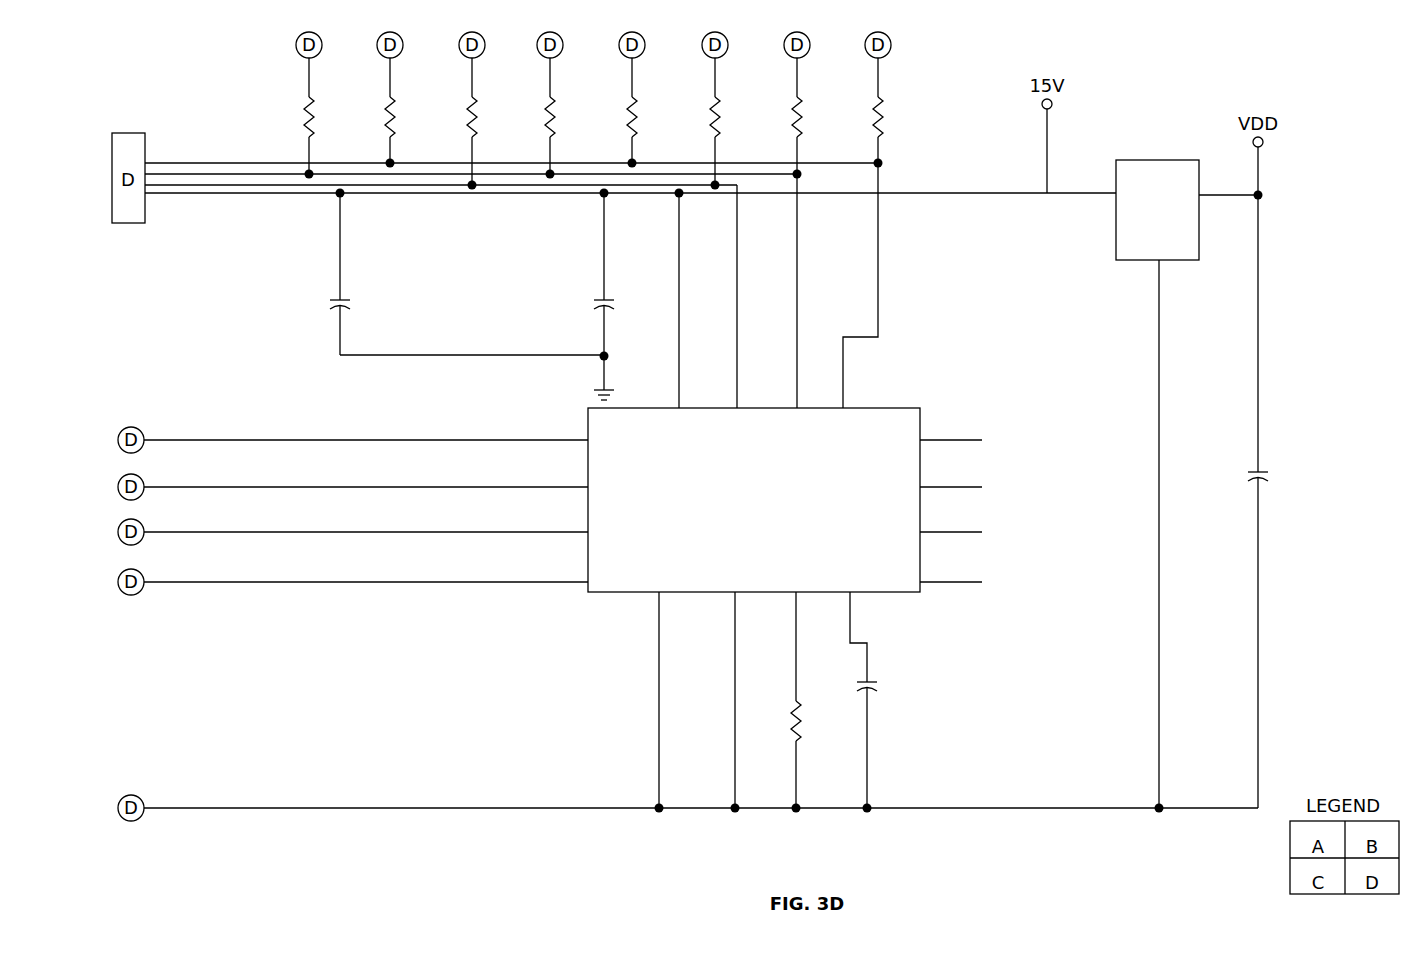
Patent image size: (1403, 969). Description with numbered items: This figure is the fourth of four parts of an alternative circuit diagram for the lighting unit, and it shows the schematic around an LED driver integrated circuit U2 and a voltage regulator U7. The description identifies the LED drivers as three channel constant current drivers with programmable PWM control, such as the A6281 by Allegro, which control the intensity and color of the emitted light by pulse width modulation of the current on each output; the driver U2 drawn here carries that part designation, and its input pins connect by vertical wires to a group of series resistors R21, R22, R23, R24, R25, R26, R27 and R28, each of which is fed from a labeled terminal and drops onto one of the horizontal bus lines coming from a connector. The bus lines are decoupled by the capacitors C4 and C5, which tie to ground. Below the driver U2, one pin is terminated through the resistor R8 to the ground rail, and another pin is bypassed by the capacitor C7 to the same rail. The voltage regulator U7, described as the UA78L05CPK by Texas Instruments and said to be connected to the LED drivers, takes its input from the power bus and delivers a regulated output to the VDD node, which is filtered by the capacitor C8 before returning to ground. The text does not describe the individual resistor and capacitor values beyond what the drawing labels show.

The resistor R21, 10 ohm R21 is at (315, 118).
The resistor R22, 10 ohm R22 is at (396, 113).
The resistor R23, 10 ohm R23 is at (478, 124).
The resistor R24, 10 ohm R24 is at (556, 118).
The resistor R25, 10 ohm R25 is at (638, 113).
The resistor R26, 10 ohm R26 is at (721, 124).
The resistor R27, 10 ohm R27 is at (803, 118).
The resistor R28, 10 ohm R28 is at (884, 113).
The capacitor C4, 4.7uF 25V C4 is at (467, 272).
The capacitor C5, 4.7uF 25V C5 is at (576, 295).
The capacitor C7, 1uF 10V C7 is at (885, 702).
The capacitor C8, 0.1uF C8 is at (1285, 477).
The resistor R8, 5.11K R8 is at (811, 702).
The LED driver IC U2 A6281 U2 is at (563, 499).
The voltage regulator U7 UA78L05CPK U7 is at (1178, 464).